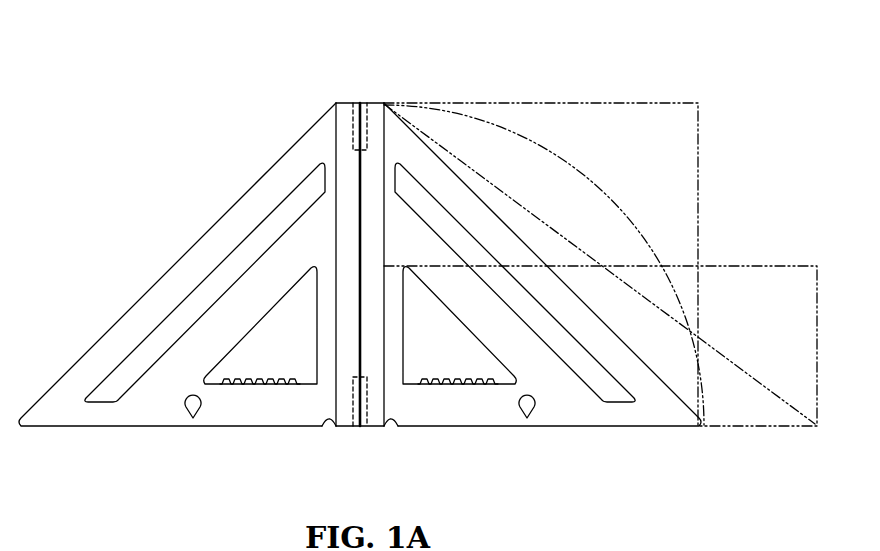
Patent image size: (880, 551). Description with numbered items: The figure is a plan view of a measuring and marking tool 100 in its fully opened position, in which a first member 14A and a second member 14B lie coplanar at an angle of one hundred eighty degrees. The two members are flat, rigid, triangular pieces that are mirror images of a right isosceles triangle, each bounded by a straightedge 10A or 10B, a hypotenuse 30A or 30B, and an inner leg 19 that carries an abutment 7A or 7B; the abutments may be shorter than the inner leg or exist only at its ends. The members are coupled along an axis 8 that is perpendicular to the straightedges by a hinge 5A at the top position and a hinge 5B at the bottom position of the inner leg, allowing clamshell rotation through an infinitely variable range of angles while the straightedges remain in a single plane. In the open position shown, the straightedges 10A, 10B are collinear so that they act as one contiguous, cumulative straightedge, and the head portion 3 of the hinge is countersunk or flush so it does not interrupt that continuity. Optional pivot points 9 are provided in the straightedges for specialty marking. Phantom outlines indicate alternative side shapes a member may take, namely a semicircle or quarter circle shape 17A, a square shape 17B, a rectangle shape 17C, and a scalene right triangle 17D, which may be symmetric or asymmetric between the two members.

The tool 100 is at (643, 48).
The straightedge 10A is at (215, 428).
The straightedge 10B is at (515, 428).
The first member 14A is at (285, 185).
The second member 14B is at (426, 172).
The hypotenuse 30A is at (168, 265).
The hypotenuse 30B is at (542, 255).
The abutment 7A is at (347, 248).
The abutment 7B is at (383, 243).
The inner leg 19 is at (347, 262).
The head portion of hinge 3 is at (359, 428).
The axis 8 is at (372, 333).
The hinge 5A is at (366, 109).
The hinge 5B is at (364, 404).
The pivot point 9 is at (326, 427).
The semicircle or quarter circle shape 17A is at (630, 218).
The square shape 17B is at (697, 120).
The rectangle shape 17C is at (712, 264).
The scalene right triangle 17D is at (720, 353).